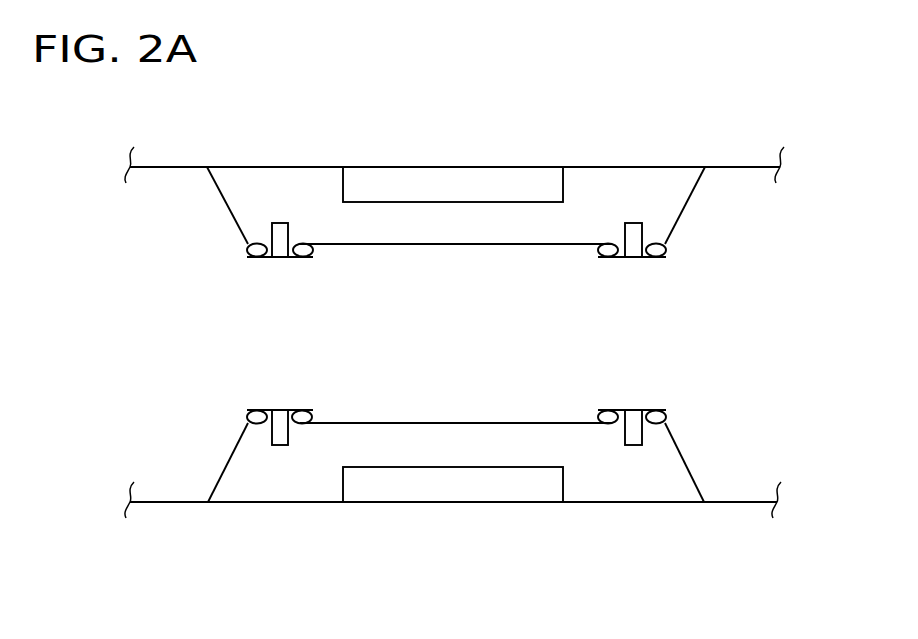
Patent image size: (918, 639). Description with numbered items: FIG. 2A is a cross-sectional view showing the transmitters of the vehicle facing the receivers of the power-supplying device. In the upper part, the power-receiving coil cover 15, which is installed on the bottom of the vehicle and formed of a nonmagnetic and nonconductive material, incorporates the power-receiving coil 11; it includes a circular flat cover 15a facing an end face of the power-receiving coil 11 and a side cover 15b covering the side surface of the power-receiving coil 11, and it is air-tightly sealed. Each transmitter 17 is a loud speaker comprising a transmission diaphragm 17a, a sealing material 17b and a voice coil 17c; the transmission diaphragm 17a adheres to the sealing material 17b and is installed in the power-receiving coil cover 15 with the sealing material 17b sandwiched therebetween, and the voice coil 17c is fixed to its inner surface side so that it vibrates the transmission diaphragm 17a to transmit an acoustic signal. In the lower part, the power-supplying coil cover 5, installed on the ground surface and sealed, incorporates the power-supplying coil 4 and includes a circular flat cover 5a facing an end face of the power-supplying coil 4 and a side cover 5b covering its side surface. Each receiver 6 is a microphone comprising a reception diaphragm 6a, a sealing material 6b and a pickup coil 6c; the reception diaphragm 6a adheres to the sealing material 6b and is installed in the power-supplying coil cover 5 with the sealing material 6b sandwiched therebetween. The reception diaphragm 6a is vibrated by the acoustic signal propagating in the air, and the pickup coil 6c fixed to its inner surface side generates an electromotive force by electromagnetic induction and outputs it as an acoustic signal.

The power-receiving coil cover 15 is at (439, 225).
The flat cover 15a is at (446, 247).
The side cover 15b is at (690, 200).
The power-receiving coil 11 is at (342, 189).
The transmitter 17 is at (455, 255).
The transmission diaphragm 17a is at (294, 258).
The sealing material 17b is at (247, 253).
The voice coil 17c is at (274, 222).
The power-supplying coil cover 5 is at (453, 444).
The flat cover 5a is at (458, 421).
The side cover 5b is at (693, 477).
The power-supplying coil 4 is at (342, 486).
The receiver 6 is at (456, 418).
The reception diaphragm 6a is at (292, 409).
The sealing material 6b is at (246, 413).
The pickup coil 6c is at (279, 447).